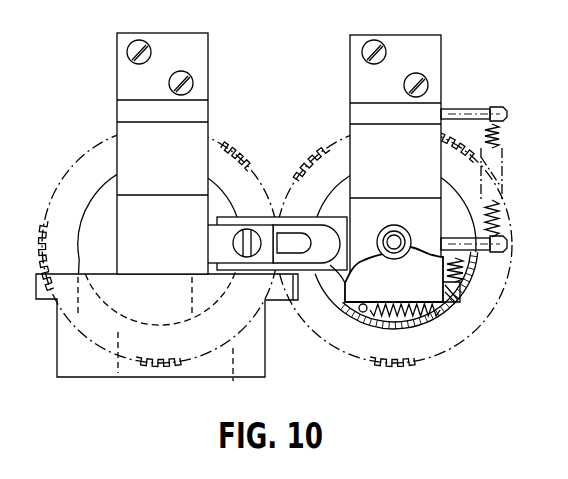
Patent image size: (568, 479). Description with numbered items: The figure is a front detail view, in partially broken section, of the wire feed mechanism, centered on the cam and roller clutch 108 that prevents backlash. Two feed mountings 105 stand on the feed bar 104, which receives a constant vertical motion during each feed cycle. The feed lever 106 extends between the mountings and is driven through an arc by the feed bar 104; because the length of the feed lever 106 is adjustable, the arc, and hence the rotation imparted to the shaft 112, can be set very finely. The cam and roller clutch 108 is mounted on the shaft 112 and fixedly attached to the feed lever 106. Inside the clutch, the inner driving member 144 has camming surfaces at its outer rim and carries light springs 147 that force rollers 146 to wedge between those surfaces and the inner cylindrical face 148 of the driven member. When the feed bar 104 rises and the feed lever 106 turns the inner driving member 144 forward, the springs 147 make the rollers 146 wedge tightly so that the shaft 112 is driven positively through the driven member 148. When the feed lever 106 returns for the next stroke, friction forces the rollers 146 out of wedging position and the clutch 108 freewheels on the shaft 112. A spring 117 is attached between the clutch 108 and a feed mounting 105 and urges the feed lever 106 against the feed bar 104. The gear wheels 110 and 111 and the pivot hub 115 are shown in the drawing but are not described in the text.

The feed bar 104 is at (66, 370).
The feed mounting 105 is at (201, 67).
The feed lever 106 is at (297, 302).
The cam and roller clutch 108 is at (478, 268).
The right gear wheel 110 is at (320, 150).
The left gear wheel 111 is at (232, 152).
The shaft 112 is at (392, 258).
The pivot hub and lever 115 is at (170, 220).
The spring 117 is at (497, 134).
The inner driving member 144 is at (433, 292).
The rollers 146 is at (358, 308).
The light springs 147 is at (397, 310).
The inner cylindrical face of the driven member 148 is at (461, 277).